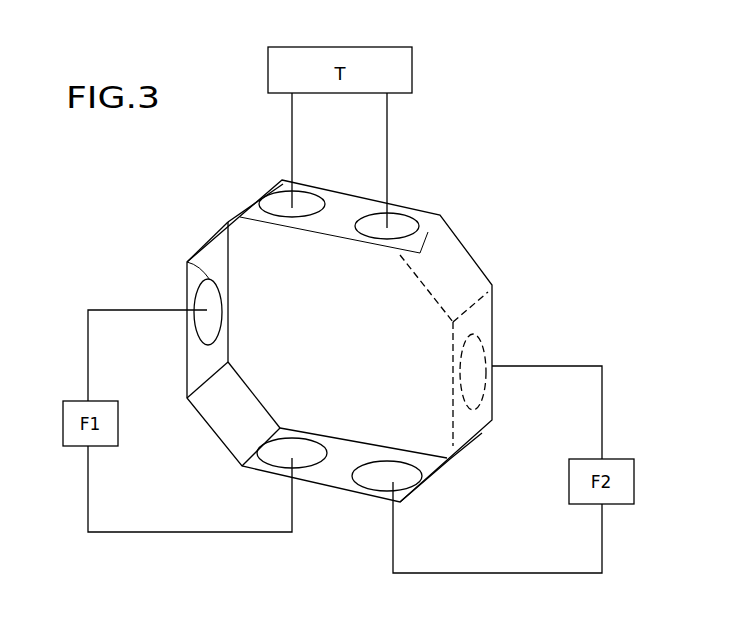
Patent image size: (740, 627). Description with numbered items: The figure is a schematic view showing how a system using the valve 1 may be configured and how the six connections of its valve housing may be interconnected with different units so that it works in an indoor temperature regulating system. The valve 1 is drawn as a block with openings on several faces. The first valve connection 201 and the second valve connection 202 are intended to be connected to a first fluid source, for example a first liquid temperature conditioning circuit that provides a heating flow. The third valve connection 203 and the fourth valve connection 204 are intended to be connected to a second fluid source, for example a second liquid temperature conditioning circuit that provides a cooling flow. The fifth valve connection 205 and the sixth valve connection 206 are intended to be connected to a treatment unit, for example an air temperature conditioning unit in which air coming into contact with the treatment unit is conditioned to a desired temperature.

The valve 1 is at (441, 112).
The first valve connection 201 is at (318, 478).
The second valve connection 202 is at (187, 262).
The third valve connection 203 is at (350, 496).
The fourth valve connection 204 is at (492, 330).
The fifth valve connection 205 is at (281, 178).
The sixth valve connection 206 is at (412, 207).